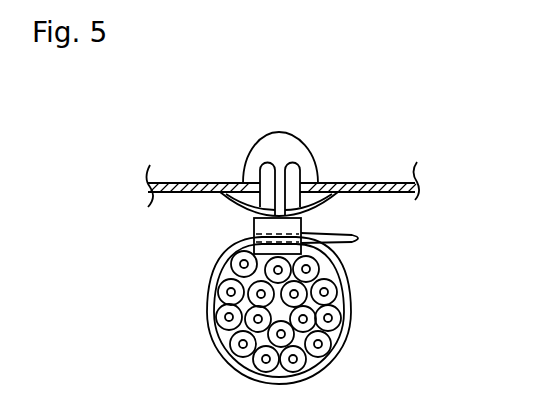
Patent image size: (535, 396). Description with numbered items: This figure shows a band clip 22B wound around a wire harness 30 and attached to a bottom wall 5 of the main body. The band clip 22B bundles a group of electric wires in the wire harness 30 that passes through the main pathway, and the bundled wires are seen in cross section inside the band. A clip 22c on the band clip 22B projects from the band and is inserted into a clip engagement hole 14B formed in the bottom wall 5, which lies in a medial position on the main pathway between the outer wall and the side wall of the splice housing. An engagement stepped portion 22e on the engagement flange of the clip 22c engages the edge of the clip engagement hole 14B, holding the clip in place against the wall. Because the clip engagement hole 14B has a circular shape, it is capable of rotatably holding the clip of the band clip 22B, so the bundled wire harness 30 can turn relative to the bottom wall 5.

The bottom wall 5 is at (389, 183).
The clip 22c is at (245, 174).
The engagement stepped portion 22e is at (238, 183).
The clip engagement hole 14B is at (308, 183).
The band clip 22B is at (352, 312).
The wire harness 30 is at (334, 346).